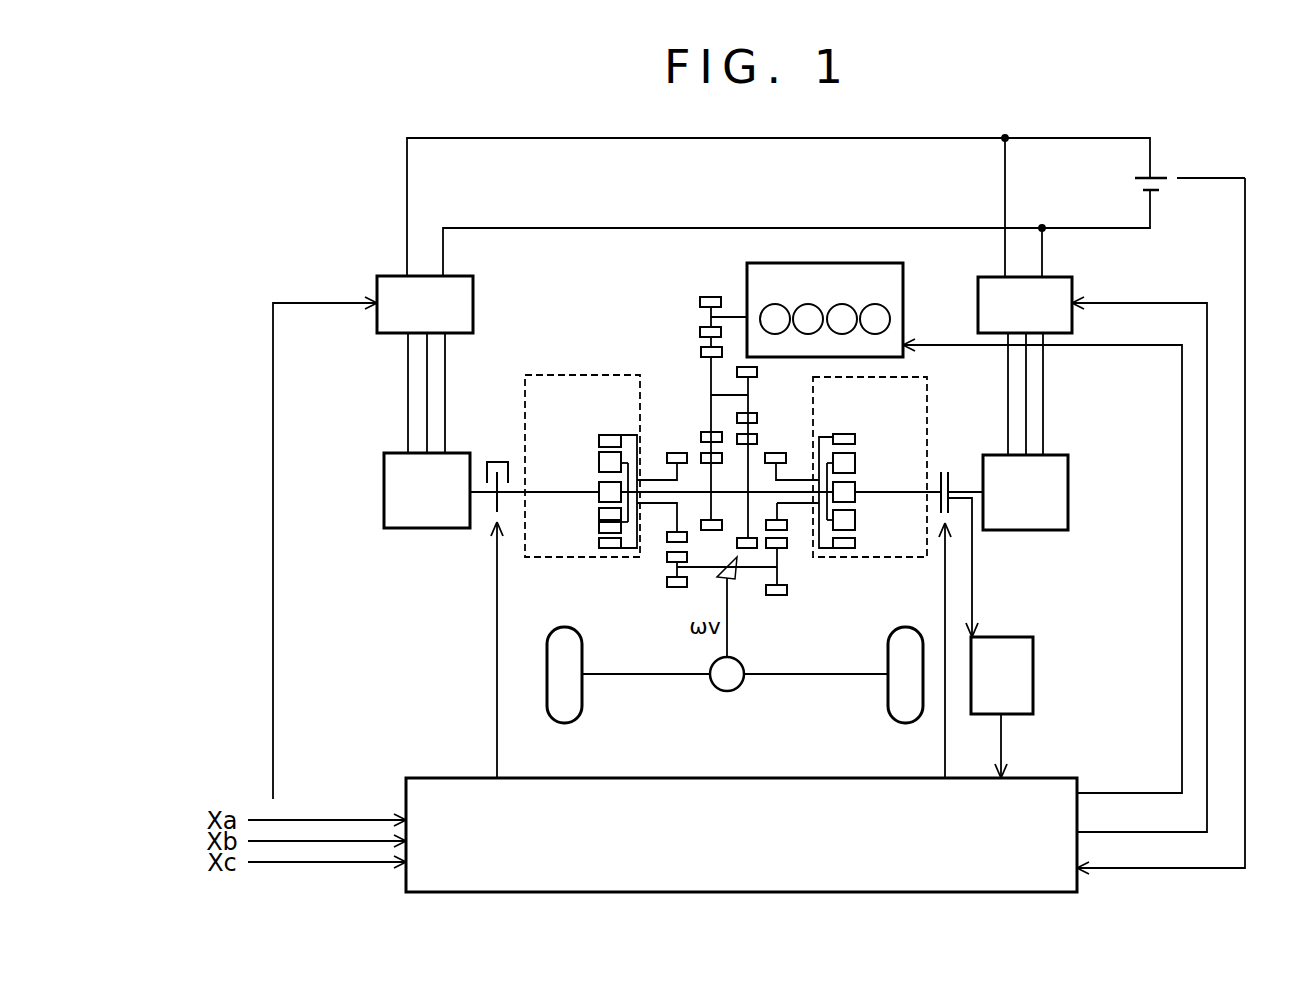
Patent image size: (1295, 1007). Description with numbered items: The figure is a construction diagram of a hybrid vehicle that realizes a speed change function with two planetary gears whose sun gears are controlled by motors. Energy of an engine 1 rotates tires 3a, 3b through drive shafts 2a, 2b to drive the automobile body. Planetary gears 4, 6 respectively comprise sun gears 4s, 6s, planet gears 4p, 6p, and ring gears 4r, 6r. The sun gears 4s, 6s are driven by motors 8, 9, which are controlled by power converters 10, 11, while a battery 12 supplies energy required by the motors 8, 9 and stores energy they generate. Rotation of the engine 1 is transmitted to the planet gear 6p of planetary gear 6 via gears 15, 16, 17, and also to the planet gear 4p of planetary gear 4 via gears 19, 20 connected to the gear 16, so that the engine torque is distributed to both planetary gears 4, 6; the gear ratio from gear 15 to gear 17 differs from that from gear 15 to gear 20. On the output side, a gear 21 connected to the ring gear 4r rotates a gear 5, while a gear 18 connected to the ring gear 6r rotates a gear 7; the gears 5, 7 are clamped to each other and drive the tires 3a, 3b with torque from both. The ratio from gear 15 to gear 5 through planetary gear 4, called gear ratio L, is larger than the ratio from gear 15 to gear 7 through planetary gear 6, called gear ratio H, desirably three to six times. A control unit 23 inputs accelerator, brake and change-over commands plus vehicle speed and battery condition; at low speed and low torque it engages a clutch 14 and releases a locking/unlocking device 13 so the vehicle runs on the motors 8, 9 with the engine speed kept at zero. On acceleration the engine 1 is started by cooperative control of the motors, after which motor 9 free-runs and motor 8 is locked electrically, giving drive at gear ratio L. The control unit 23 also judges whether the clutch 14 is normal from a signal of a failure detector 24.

The engine 1 is at (905, 273).
The drive shaft 2a is at (645, 673).
The drive shaft 2b is at (828, 673).
The tire 3a is at (567, 627).
The tire 3b is at (909, 627).
The planetary gear 4 is at (883, 467).
The ring gear 4r is at (855, 438).
The sun gear 4s is at (855, 487).
The planet gear 4p is at (855, 518).
The gear 5 is at (787, 548).
The planetary gear 6 is at (585, 446).
The ring gear 6r is at (599, 439).
The sun gear 6s is at (599, 486).
The planet gear 6p is at (599, 524).
The gear 7 is at (667, 557).
The motor 8 is at (1068, 483).
The motor 9 is at (415, 528).
The power converter 10 is at (1072, 292).
The power converter 11 is at (473, 304).
The battery 12 is at (1162, 176).
The locking/unlocking device 13 is at (497, 462).
The clutch 14 is at (943, 470).
The gear 15 is at (700, 301).
The gear 16 is at (701, 350).
The gear 17 is at (702, 454).
The gear 18 is at (675, 453).
The gear 19 is at (757, 372).
The gear 20 is at (757, 439).
The gear 21 is at (779, 453).
The control unit 23 is at (837, 778).
The failure detector 24 is at (1033, 663).